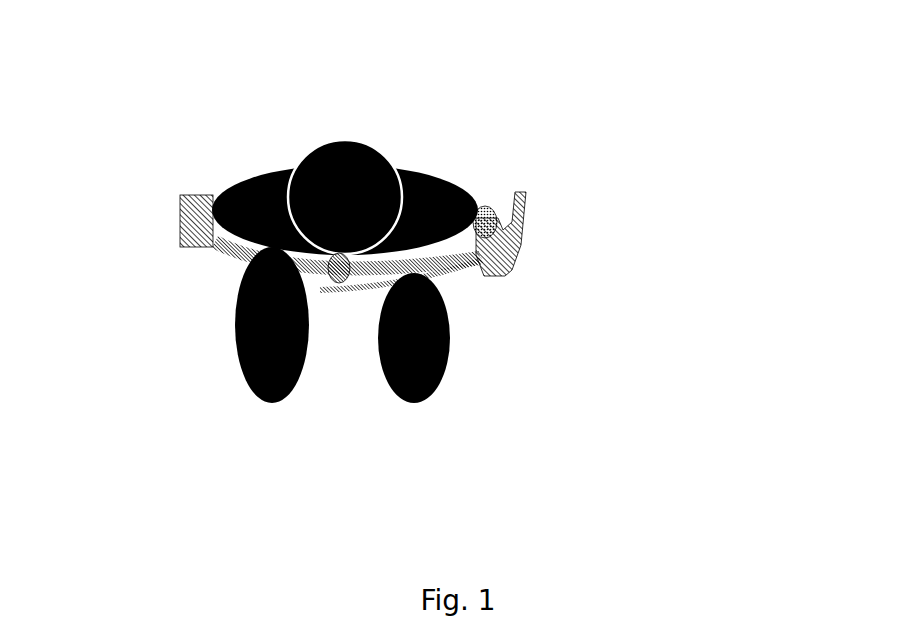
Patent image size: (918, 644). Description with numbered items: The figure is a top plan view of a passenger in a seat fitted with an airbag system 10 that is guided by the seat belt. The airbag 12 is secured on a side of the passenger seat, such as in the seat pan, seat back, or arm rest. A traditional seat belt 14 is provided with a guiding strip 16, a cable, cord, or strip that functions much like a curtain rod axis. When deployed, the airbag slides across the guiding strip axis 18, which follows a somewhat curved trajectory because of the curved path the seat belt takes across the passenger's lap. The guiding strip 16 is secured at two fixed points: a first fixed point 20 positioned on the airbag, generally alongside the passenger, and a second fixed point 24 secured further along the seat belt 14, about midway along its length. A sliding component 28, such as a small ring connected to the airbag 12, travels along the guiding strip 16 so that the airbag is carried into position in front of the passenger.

The airbag system 10 is at (364, 96).
The airbag 12 is at (520, 247).
The seat belt 14 is at (223, 255).
The guiding strip 16 is at (440, 268).
The guiding strip axis 18 is at (430, 273).
The first fixed point 20 is at (487, 205).
The second fixed point 24 is at (345, 272).
The sliding component 28 is at (478, 262).